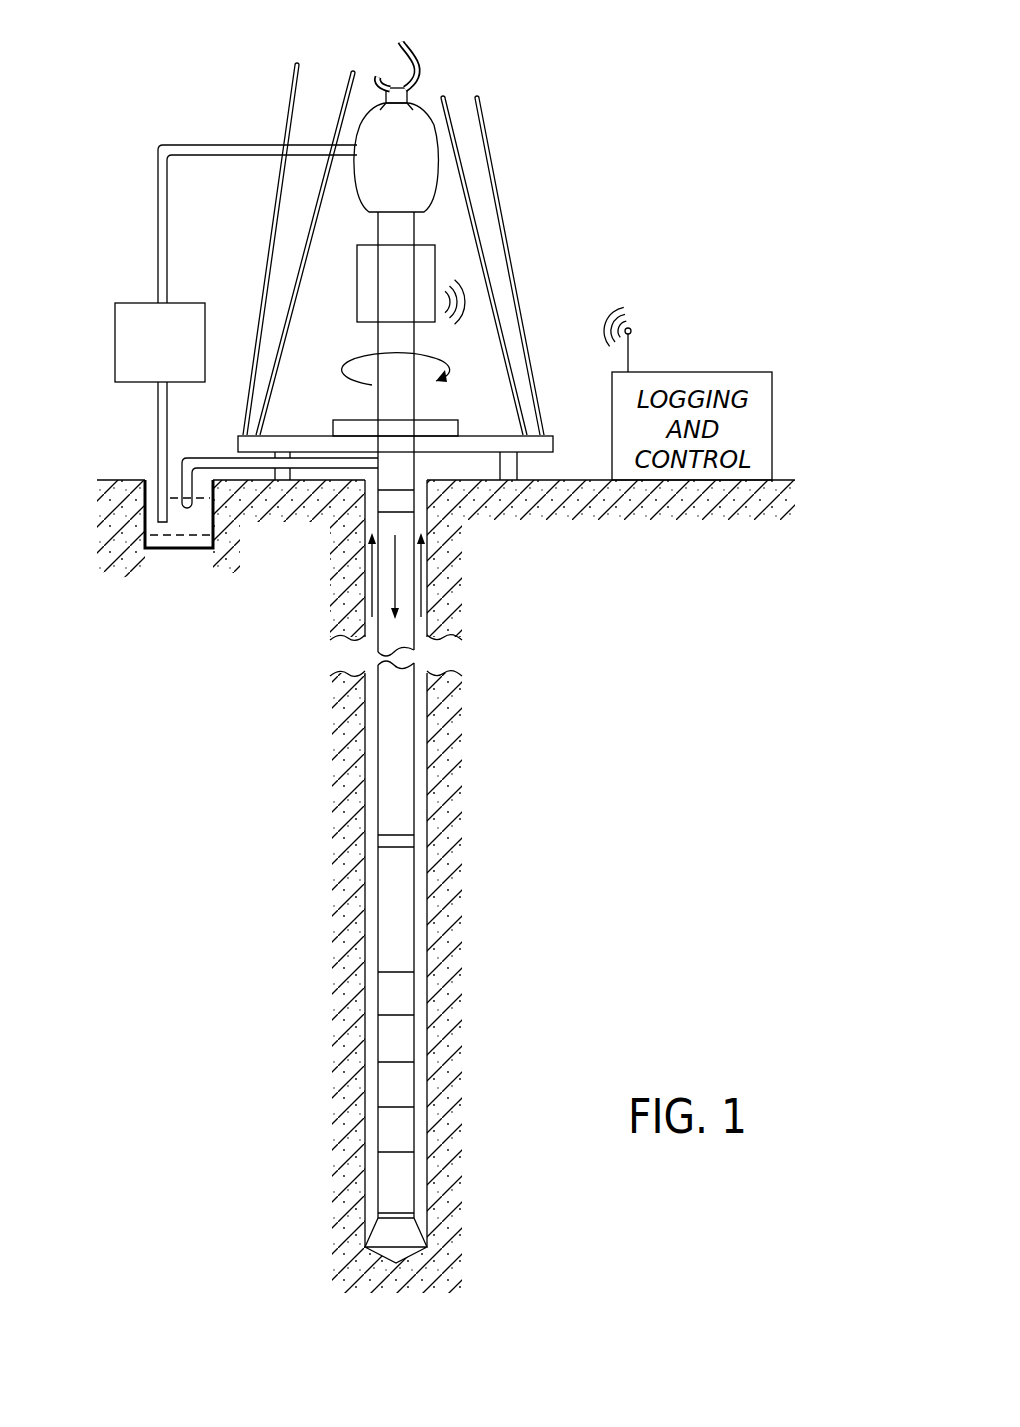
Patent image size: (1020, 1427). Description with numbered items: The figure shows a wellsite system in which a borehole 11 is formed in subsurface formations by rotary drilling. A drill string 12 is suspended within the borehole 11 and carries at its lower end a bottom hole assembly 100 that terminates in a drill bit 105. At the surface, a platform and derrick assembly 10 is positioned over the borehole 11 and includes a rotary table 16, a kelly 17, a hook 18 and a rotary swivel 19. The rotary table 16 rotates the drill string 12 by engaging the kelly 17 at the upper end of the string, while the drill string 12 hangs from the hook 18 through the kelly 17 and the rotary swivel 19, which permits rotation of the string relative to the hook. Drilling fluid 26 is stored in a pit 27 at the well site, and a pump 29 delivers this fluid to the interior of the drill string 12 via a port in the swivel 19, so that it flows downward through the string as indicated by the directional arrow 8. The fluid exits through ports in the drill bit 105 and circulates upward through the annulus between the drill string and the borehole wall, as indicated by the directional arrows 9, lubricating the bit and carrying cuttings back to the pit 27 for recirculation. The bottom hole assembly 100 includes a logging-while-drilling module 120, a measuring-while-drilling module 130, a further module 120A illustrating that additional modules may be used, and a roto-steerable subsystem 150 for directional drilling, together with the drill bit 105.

The platform and derrick assembly 10 is at (534, 124).
The directional arrow 8 is at (393, 592).
The directional arrows 9 is at (426, 561).
The borehole 11 is at (421, 481).
The drill string 12 is at (396, 487).
The rotary table 16 is at (447, 421).
The kelly 17 is at (390, 406).
The hook 18 is at (394, 50).
The rotary swivel 19 is at (373, 193).
The drilling fluid 26 is at (183, 541).
The pit 27 is at (151, 484).
The pump 29 is at (115, 342).
The bottom hole assembly 100 is at (379, 970).
The drill bit 105 is at (443, 1240).
The logging-while-drilling module 120 is at (405, 1038).
The measuring-while-drilling module 130 is at (405, 1090).
The LWD/MWD module 120A is at (405, 1133).
The roto-steerable subsystem 150 is at (405, 1180).